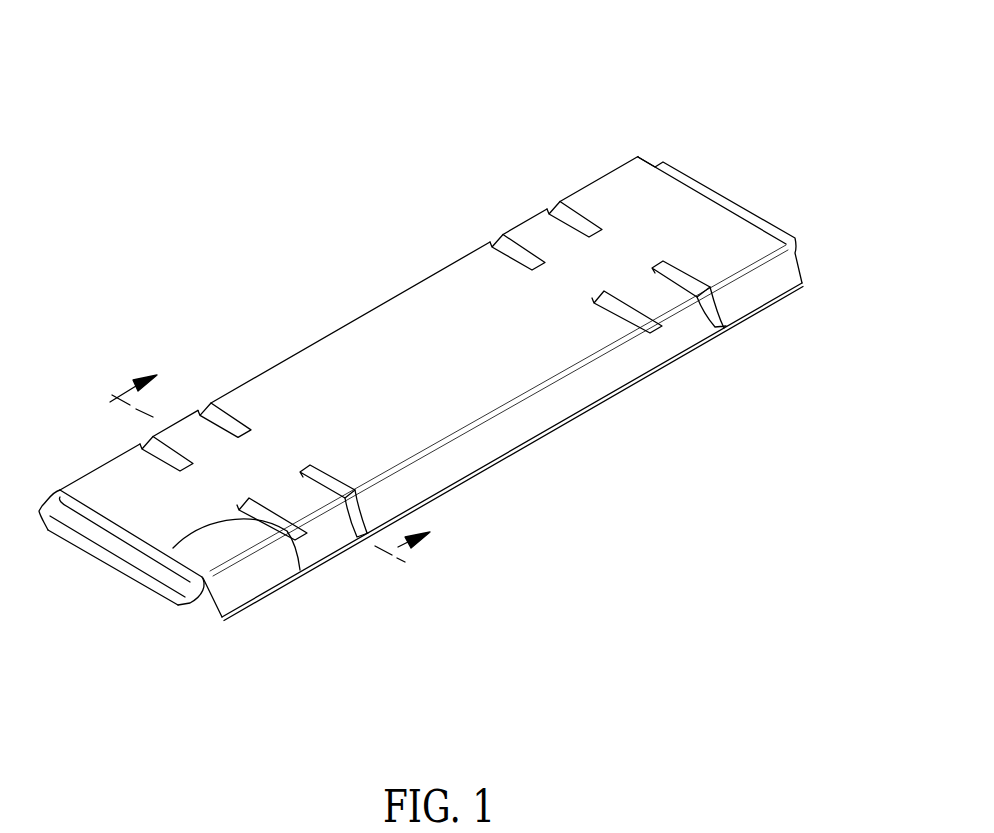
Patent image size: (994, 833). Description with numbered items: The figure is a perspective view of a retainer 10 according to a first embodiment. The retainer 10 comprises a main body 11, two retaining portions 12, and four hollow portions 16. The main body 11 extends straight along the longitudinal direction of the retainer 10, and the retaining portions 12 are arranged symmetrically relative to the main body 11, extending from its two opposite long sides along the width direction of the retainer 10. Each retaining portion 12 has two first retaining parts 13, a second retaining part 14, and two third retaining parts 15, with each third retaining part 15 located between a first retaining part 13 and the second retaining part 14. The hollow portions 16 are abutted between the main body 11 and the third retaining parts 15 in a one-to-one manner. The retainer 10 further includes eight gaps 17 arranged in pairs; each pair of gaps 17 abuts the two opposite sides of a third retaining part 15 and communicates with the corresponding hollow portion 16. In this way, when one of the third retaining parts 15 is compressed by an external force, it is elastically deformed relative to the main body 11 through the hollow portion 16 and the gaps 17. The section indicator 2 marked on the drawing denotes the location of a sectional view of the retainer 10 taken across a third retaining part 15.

The retainer 10 is at (640, 76).
The main body 11 is at (480, 330).
The retaining portion 12 is at (349, 277).
The first retaining part 13 is at (98, 487).
The second retaining part 14 is at (386, 335).
The third retaining part 15 is at (183, 437).
The hollow portion 16 is at (688, 334).
The gap 17 is at (683, 280).
The section line 2 is at (270, 476).